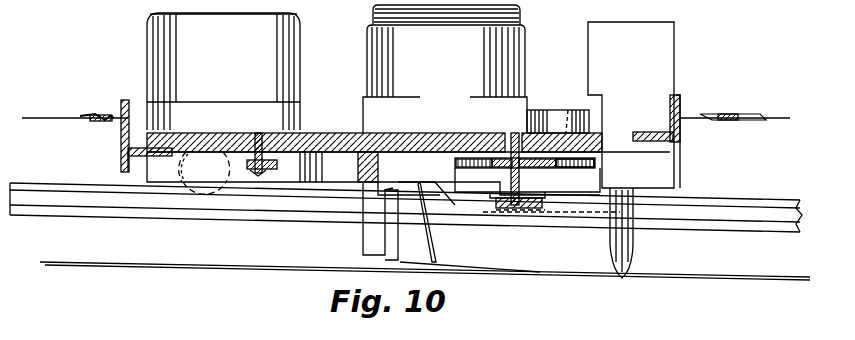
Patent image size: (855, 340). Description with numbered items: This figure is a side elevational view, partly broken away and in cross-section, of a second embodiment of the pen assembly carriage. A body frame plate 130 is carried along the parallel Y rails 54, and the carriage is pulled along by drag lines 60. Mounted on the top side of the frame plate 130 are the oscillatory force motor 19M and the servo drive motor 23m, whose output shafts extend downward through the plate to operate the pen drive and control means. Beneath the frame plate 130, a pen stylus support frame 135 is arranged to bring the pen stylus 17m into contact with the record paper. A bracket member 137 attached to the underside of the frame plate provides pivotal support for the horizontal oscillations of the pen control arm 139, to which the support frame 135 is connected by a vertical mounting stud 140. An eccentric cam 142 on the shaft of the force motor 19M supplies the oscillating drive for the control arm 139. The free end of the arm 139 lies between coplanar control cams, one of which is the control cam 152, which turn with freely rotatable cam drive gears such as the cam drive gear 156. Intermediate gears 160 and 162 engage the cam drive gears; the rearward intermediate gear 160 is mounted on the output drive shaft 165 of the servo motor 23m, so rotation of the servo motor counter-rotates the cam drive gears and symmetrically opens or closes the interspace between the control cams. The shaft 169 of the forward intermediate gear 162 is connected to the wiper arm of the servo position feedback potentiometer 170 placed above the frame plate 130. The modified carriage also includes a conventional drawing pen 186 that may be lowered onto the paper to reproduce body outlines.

The oscillatory force motor 19M is at (292, 60).
The servo drive motor 23m is at (524, 48).
The output drive shaft 165 is at (497, 122).
The servo position feedback potentiometer 170 is at (558, 104).
The shaft 169 is at (562, 96).
The body frame plate 130 is at (322, 133).
The drag lines 60 is at (772, 118).
The intermediate gear 160 is at (506, 161).
The cam drive gear 156 is at (512, 170).
The intermediate gear 162 is at (586, 184).
The control cam 152 is at (495, 208).
The bracket member 137 is at (285, 190).
The eccentric cam 142 is at (250, 160).
The rails 54 is at (752, 200).
The vertical mounting stud 140 is at (363, 228).
The pen control arm 139 is at (478, 212).
The pen stylus support frame 135 is at (527, 255).
The pen stylus 17m is at (568, 268).
The drawing pen 186 is at (636, 253).